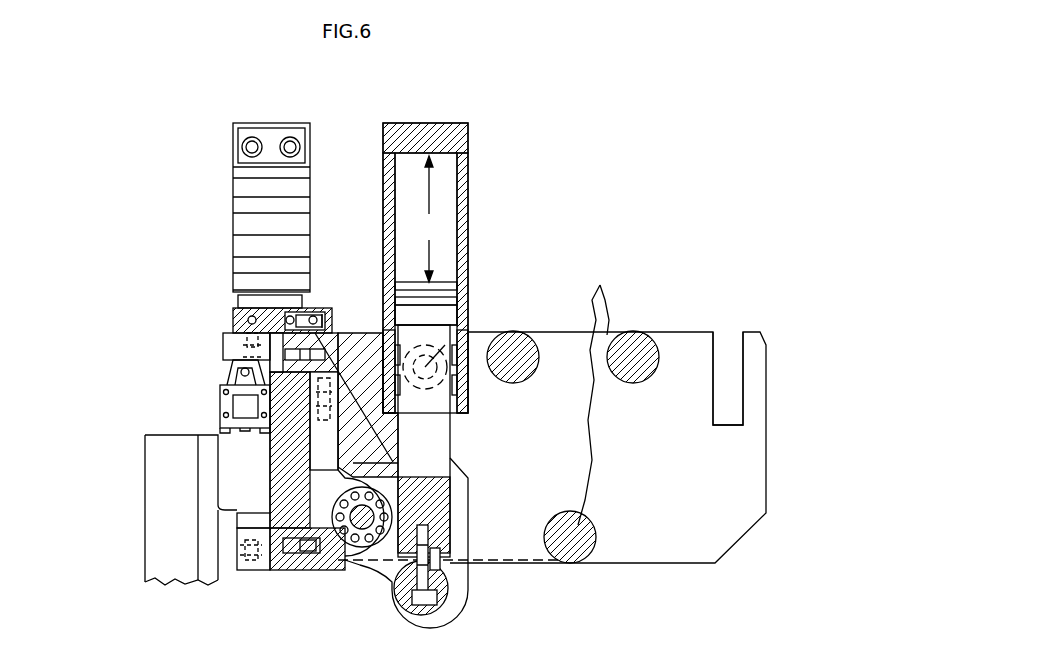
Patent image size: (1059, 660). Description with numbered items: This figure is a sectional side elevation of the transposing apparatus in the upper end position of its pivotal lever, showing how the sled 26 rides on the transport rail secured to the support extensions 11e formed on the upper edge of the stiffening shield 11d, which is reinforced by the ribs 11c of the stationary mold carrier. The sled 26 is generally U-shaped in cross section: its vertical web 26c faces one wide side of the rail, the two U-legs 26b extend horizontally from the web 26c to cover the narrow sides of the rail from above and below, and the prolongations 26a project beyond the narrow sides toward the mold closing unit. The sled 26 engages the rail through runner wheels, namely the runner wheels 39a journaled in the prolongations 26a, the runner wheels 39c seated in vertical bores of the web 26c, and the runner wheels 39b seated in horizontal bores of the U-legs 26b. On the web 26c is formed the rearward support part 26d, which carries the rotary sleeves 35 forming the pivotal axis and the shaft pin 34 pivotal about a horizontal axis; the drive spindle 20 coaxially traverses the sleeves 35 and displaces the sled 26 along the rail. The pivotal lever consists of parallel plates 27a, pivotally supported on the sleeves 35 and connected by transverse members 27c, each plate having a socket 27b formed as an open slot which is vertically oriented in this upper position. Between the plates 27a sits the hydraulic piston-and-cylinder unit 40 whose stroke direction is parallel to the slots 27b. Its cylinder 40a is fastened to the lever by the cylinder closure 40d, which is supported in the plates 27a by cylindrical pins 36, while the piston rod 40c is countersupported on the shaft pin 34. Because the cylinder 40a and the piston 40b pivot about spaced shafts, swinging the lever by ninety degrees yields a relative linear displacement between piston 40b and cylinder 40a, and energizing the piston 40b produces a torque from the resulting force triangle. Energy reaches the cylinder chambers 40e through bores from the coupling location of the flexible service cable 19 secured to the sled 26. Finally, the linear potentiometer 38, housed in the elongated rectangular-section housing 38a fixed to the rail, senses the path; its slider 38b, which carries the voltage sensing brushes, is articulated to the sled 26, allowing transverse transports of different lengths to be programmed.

The stiffening rib 11c is at (177, 493).
The stiffening shield 11d is at (212, 472).
The support extension 11e is at (237, 445).
The flexible service cable 19 is at (252, 223).
The drive spindle 20 is at (347, 563).
The sled 26 is at (337, 334).
The prolongation 26a is at (243, 357).
The U-leg 26b is at (313, 307).
The vertical web 26c is at (343, 437).
The rearward support part 26d is at (353, 463).
The plate 27a is at (673, 535).
The socket 27b is at (730, 370).
The transverse member 27c is at (602, 390).
The shaft pin 34 is at (440, 587).
The rotary sleeve 35 is at (345, 572).
The cylindrical pin 36 is at (445, 332).
The linear potentiometer 38 is at (220, 389).
The housing 38a is at (230, 405).
The slider 38b is at (247, 363).
The runner wheel 39a is at (233, 323).
The runner wheel 39b is at (300, 310).
The runner wheel 39c is at (340, 386).
The hydraulic piston-and-cylinder unit 40 is at (471, 186).
The cylinder 40a is at (470, 125).
The piston 40b is at (472, 290).
The piston rod 40c is at (430, 455).
The cylinder closure 40d is at (470, 405).
The cylinder chamber 40e is at (443, 276).